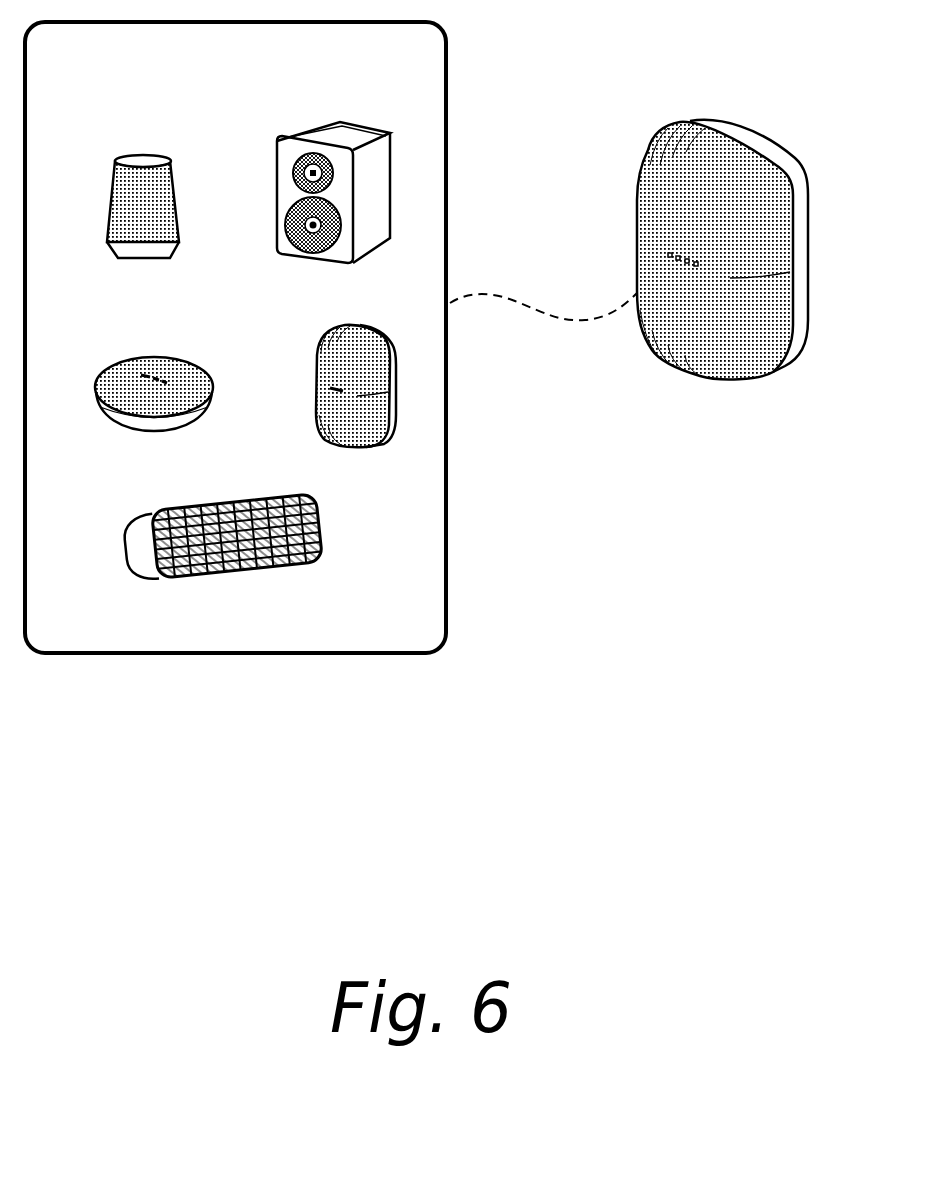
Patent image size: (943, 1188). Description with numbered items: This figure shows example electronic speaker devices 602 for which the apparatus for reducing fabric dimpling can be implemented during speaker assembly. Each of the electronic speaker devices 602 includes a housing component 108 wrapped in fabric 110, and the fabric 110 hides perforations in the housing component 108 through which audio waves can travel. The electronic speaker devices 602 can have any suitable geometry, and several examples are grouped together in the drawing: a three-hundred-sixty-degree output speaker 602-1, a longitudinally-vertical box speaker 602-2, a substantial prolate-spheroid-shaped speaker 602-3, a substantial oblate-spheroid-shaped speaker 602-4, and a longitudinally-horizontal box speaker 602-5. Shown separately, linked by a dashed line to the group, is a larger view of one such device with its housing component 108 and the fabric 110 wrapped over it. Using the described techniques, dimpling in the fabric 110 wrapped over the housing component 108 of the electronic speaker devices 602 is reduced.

The electronic speaker devices 602 is at (258, 93).
The 360° output speaker 602-1 is at (142, 223).
The longitudinally-vertical box speaker 602-2 is at (333, 213).
The substantial prolate-spheroid-shaped speaker 602-3 is at (154, 417).
The substantial oblate-spheroid-shaped speaker 602-4 is at (356, 406).
The longitudinally-horizontal box speaker 602-5 is at (222, 560).
The housing component 108 is at (733, 140).
The fabric 110 is at (742, 332).